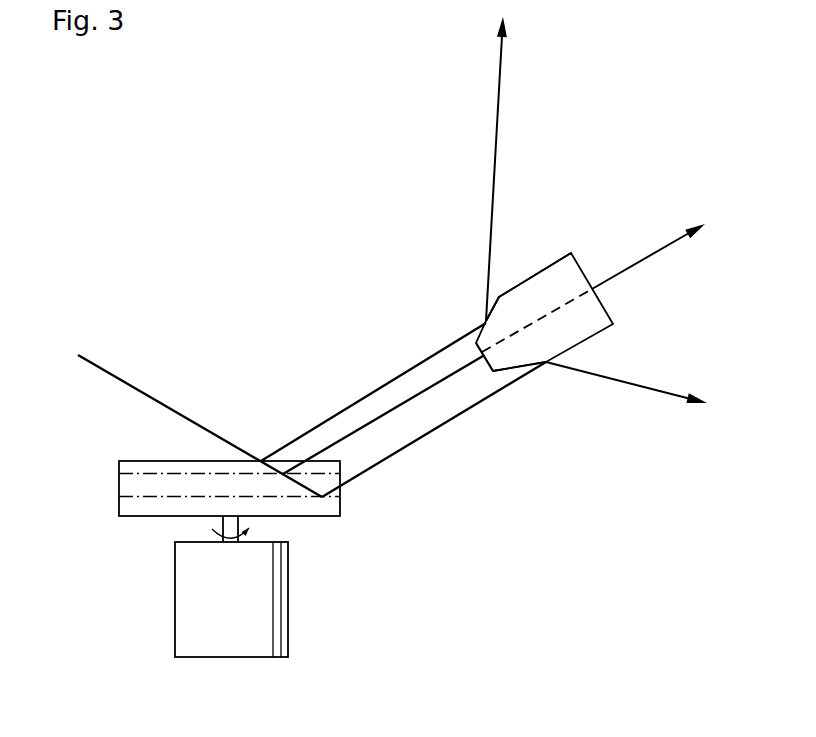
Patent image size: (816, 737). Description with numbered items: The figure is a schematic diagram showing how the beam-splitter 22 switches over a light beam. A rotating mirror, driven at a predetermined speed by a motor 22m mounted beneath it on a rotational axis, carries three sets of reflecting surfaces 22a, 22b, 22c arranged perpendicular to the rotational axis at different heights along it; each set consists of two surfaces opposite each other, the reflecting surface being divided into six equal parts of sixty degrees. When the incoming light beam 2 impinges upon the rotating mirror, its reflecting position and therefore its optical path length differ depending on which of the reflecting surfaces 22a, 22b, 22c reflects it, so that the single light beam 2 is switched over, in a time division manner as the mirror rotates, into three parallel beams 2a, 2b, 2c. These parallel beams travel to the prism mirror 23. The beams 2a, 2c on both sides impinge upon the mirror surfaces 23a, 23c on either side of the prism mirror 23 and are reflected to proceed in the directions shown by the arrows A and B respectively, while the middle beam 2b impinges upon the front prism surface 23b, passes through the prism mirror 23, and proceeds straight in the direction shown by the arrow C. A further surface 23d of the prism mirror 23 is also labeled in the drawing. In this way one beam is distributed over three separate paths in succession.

The light beam 2 is at (117, 376).
The parallel beam 2a is at (360, 401).
The middle parallel beam 2b is at (405, 402).
The parallel beam 2c is at (447, 423).
The beam-splitter 22 is at (211, 535).
The reflecting surface 22a is at (168, 461).
The reflecting surface 22b is at (130, 474).
The reflecting surface 22c is at (128, 495).
The motor 22m is at (266, 614).
The prism mirror 23 is at (513, 296).
The mirror surface 23a is at (492, 306).
The front prism surface 23b is at (477, 352).
The mirror surface 23c is at (507, 373).
The prism upper facet 23d is at (537, 292).
The arrow A is at (498, 137).
The arrow B is at (630, 382).
The arrow C is at (633, 264).